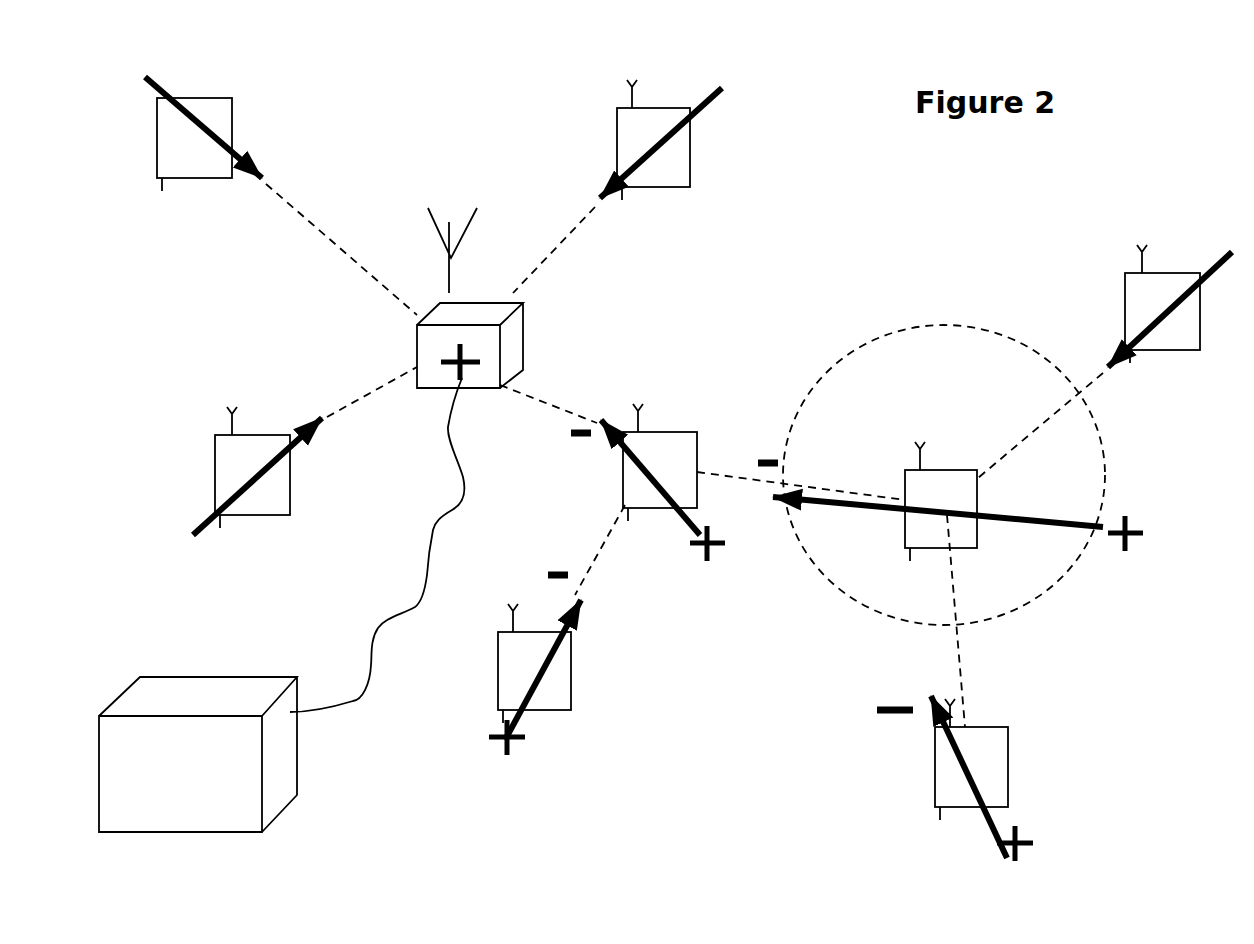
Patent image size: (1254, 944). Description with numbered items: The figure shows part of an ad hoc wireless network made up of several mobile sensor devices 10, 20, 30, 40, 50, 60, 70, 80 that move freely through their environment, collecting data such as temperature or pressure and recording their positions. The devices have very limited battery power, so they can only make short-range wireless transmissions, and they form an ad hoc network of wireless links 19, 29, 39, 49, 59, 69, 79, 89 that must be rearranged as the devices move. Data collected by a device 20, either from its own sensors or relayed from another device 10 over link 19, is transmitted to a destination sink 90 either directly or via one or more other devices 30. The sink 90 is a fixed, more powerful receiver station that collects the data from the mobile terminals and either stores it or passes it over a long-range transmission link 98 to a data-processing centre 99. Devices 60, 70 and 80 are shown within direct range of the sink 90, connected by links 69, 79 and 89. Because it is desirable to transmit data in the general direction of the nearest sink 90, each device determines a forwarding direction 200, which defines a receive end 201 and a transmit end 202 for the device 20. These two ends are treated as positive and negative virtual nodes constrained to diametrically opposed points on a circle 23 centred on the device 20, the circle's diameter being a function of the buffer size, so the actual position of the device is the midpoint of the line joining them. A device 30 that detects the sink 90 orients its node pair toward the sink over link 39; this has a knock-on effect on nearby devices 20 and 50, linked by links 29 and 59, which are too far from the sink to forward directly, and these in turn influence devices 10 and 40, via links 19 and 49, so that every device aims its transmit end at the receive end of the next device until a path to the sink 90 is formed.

The device 10 is at (1170, 306).
The wireless link 19 is at (1090, 372).
The device 20 is at (944, 501).
The circle 23 is at (878, 337).
The wireless link 29 is at (723, 470).
The device 30 is at (648, 482).
The wireless link 39 is at (533, 413).
The device 40 is at (967, 778).
The wireless link 49 is at (983, 698).
The device 50 is at (555, 665).
The wireless link 59 is at (605, 540).
The device 60 is at (257, 471).
The wireless link 69 is at (382, 377).
The device 70 is at (661, 140).
The wireless link 79 is at (596, 204).
The device 80 is at (203, 131).
The wireless link 89 is at (287, 207).
The sink 90 is at (470, 298).
The long-range transmission link 98 is at (377, 545).
The data-processing centre 99 is at (222, 754).
The forwarding direction 200 is at (848, 507).
The receive end 201 is at (1120, 544).
The transmit end 202 is at (807, 458).